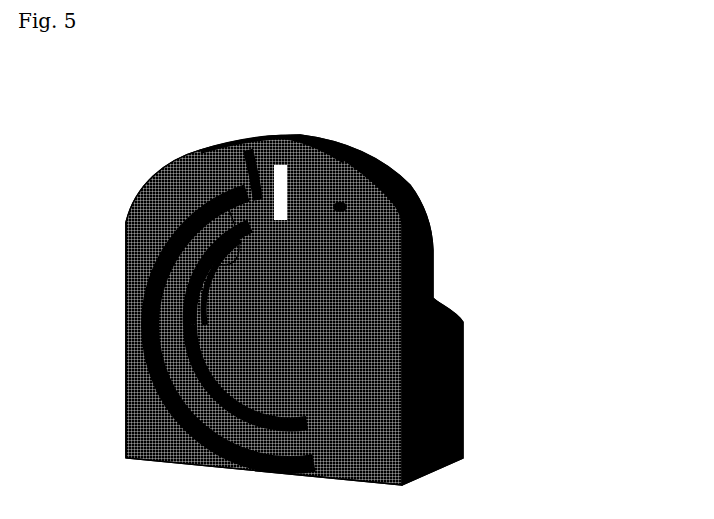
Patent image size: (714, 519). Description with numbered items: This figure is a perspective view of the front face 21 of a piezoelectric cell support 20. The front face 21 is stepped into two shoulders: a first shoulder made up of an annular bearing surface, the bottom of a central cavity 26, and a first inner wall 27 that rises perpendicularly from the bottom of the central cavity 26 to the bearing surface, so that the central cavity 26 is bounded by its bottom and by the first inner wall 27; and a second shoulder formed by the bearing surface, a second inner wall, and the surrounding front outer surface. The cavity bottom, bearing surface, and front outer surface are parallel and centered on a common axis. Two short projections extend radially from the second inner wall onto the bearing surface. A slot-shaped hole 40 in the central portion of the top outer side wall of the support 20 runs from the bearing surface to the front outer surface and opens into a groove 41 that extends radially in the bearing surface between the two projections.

The piezoelectric cell support 20 is at (128, 176).
The front face 21 is at (105, 300).
The central cavity 26 is at (305, 320).
The first inner wall 27 is at (225, 200).
The slot-shaped hole 40 is at (257, 172).
The groove 41 is at (296, 192).